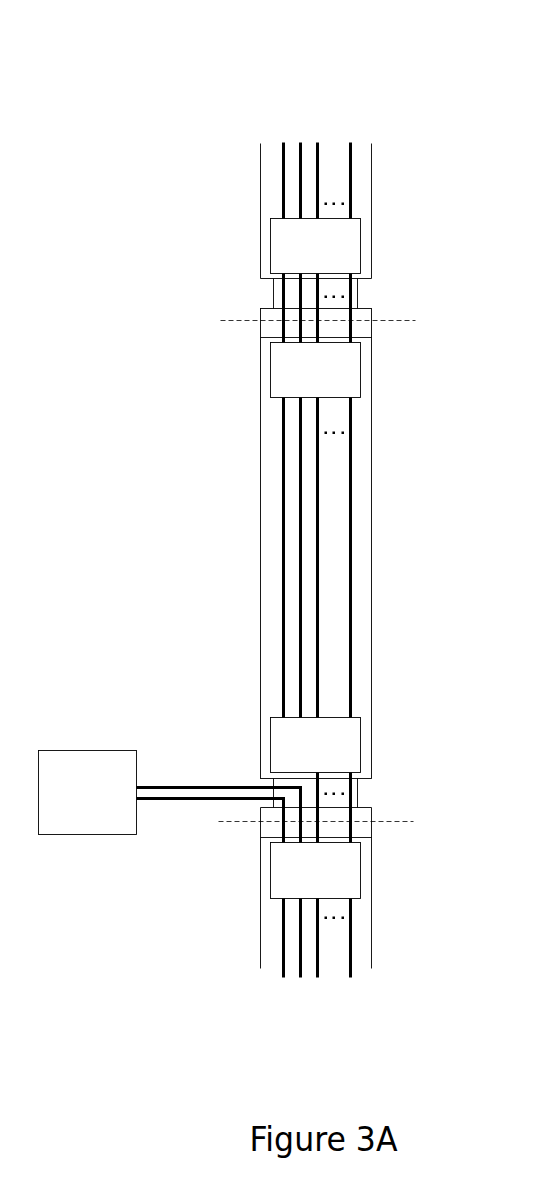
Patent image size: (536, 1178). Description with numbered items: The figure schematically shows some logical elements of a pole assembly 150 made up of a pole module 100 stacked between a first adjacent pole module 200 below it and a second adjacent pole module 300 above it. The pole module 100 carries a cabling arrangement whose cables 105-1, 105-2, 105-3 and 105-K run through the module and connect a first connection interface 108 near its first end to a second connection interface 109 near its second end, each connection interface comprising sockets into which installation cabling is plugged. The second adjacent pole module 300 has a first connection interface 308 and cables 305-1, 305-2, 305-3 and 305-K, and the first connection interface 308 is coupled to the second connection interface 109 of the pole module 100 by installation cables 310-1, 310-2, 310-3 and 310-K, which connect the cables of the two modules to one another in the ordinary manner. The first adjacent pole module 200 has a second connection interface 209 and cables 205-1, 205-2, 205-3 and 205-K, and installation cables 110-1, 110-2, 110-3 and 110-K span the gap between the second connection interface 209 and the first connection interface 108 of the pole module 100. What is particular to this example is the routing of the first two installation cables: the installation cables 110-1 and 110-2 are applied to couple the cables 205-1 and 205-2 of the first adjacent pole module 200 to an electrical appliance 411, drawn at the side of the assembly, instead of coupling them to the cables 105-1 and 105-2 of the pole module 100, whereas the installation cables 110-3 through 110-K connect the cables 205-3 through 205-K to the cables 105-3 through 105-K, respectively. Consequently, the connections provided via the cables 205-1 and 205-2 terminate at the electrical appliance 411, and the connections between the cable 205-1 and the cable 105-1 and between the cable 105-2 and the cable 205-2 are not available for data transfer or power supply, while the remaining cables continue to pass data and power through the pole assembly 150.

The pole assembly 150 is at (336, 40).
The second adjacent pole module 300 is at (231, 176).
The pole module 100 is at (222, 468).
The first adjacent pole module 200 is at (221, 910).
The cable 305-1 is at (283, 147).
The cable 305-2 is at (300, 152).
The cable 305-3 is at (317, 163).
The cable 305-K is at (350, 180).
The first connection interface 308 is at (358, 230).
The installation cable 310-1 is at (273, 287).
The installation cable 310-2 is at (273, 301).
The installation cable 310-3 is at (317, 298).
The installation cable 310-K is at (355, 301).
The second connection interface 109 is at (357, 367).
The cable 105-1 is at (283, 490).
The cable 105-2 is at (298, 520).
The cable 105-3 is at (317, 550).
The cable 105-K is at (350, 535).
The first connection interface 108 is at (360, 730).
The installation cable 110-1 is at (223, 800).
The installation cable 110-2 is at (230, 787).
The installation cable 110-3 is at (318, 810).
The installation cable 110-K is at (355, 798).
The electrical appliance 411 is at (88, 793).
The second connection interface 209 is at (360, 880).
The cable 205-1 is at (282, 977).
The cable 205-2 is at (298, 977).
The cable 205-3 is at (318, 962).
The cable 205-K is at (352, 945).